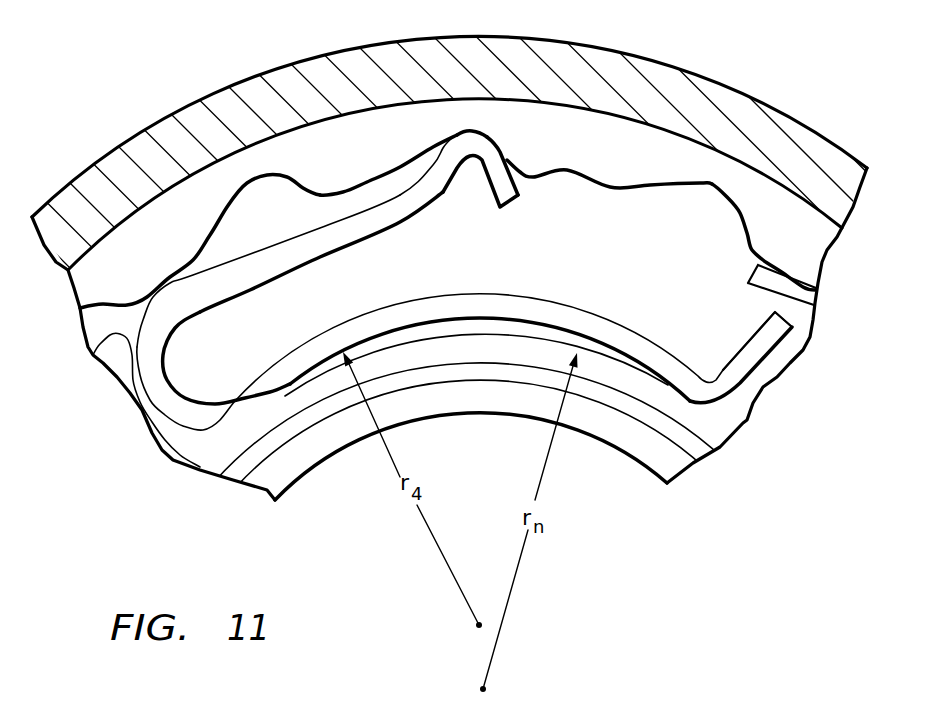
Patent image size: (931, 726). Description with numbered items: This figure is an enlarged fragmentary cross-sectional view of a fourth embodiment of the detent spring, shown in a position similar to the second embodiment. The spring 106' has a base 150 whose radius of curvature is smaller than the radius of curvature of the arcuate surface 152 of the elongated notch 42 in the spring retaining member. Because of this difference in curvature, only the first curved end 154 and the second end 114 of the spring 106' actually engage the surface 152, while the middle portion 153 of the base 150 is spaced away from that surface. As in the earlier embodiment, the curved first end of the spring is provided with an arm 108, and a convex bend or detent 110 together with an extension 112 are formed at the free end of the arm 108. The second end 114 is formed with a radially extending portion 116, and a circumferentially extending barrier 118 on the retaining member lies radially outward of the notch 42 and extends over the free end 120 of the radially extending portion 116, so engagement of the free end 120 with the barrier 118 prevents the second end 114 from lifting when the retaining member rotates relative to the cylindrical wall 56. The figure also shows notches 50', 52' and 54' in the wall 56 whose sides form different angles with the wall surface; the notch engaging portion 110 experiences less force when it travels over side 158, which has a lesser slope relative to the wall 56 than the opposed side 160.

The cylindrical wall 56 is at (155, 263).
The notch 50' is at (200, 241).
The notch 52' is at (441, 153).
The notch 54' is at (763, 237).
The opposed side 160 is at (398, 166).
The convex bend or detent 110 is at (487, 122).
The extension 112 is at (516, 182).
The side 158 is at (527, 168).
The arm 108 is at (350, 243).
The first curved end 154 is at (257, 407).
The spring 106' is at (513, 317).
The middle portion 153 is at (493, 305).
The base 150 is at (593, 317).
The arcuate surface 152 is at (448, 334).
The elongated notch 42 is at (393, 337).
The barrier 118 is at (760, 277).
The free end 120 is at (755, 333).
The radially extending portion 116 is at (774, 342).
The second end 114 is at (752, 372).